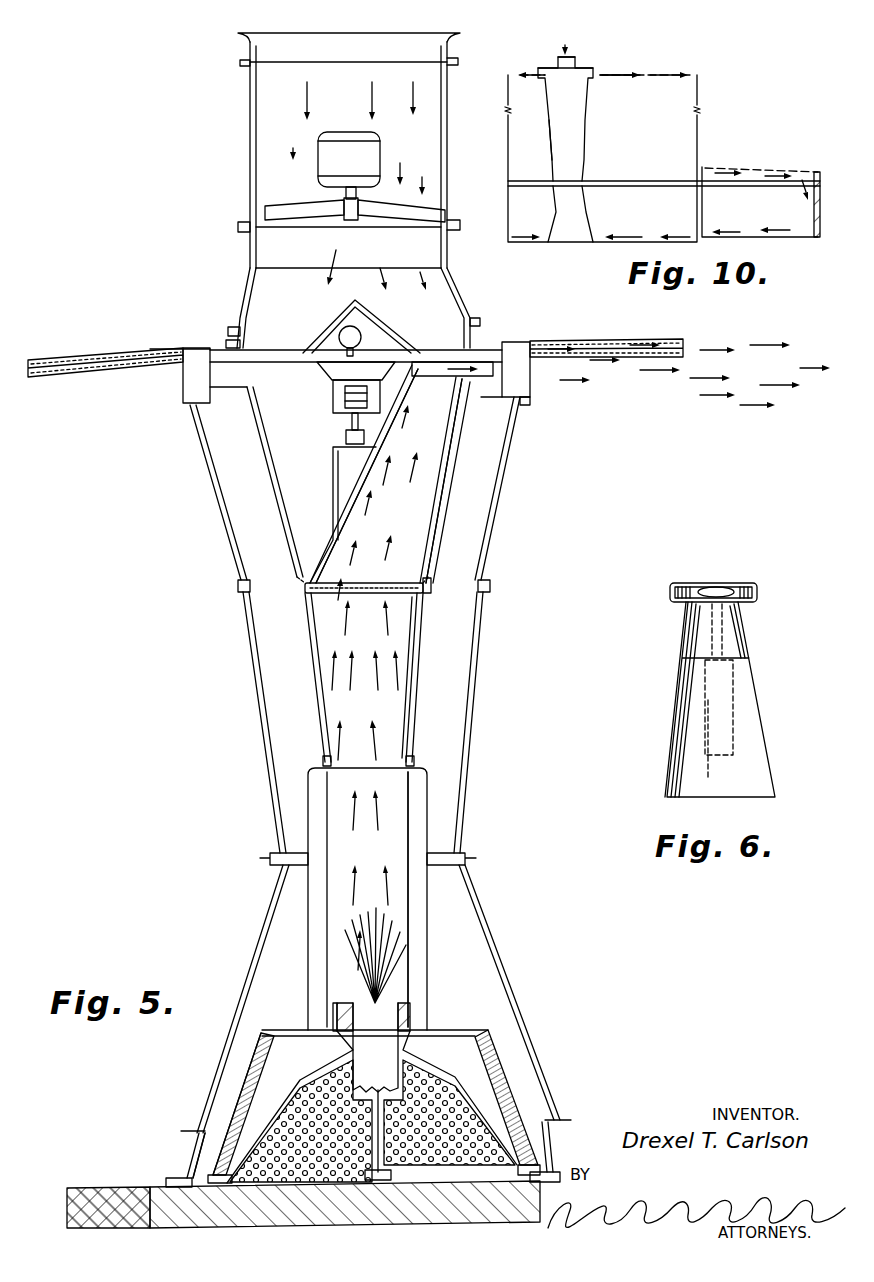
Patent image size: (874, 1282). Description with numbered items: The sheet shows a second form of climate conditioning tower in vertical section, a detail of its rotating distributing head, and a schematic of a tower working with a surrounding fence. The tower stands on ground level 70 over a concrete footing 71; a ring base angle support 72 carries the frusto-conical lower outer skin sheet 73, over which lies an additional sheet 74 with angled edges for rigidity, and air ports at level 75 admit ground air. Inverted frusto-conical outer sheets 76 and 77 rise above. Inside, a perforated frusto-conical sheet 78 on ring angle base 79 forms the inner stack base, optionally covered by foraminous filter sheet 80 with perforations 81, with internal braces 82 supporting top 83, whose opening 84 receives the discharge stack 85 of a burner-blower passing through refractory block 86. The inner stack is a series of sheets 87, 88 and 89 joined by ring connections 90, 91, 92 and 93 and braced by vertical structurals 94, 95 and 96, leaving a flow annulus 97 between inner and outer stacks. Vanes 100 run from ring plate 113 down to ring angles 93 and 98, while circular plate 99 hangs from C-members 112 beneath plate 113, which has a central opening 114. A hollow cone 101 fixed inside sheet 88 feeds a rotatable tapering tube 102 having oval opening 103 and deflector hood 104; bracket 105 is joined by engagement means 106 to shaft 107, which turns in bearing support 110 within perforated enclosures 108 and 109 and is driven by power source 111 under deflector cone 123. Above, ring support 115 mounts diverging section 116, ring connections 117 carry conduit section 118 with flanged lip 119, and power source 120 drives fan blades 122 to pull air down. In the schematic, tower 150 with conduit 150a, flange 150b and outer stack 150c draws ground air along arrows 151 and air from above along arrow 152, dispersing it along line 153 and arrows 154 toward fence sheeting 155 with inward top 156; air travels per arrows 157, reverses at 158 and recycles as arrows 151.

In FIG. 5, the ground level 70 is at (95, 1188).
In FIG. 5, the concrete foundation or footing 71 is at (286, 1182).
In FIG. 5, the ring base angle support 72 is at (168, 1180).
In FIG. 5, the lower outer stack skin sheet 73 is at (232, 1094).
In FIG. 5, the additional frusto-conical sheet 74 is at (248, 945).
In FIG. 5, the openings or ports level 75 is at (180, 1134).
In FIG. 5, the inverted frusto-conical outer stack sheet 76 is at (262, 743).
In FIG. 5, the inverted frusto-conical outer stack sheet 77 is at (205, 478).
In FIG. 5, the perforated frusto-conical metal sheet 78 is at (320, 1062).
In FIG. 5, the ring angle base 79 is at (208, 1188).
In FIG. 5, the sheet of foraminous material 80 is at (262, 1056).
In FIG. 5, the perforations 81 is at (248, 1070).
In FIG. 5, the internal structural braces 82 is at (436, 1062).
In FIG. 5, the top 83 is at (462, 1032).
In FIG. 5, the opening 84 is at (410, 1010).
In FIG. 5, the discharge stack 85 is at (392, 994).
In FIG. 5, the refractory block 86 is at (337, 1012).
In FIG. 5, the inner stack metal sheet 87 is at (412, 805).
In FIG. 5, the inner stack metal sheet 88 is at (418, 660).
In FIG. 5, the inner stack metal sheet 89 is at (444, 490).
In FIG. 5, the ring connection 90 is at (410, 1030).
In FIG. 5, the ring connection 91 is at (415, 758).
In FIG. 5, the ring connection 92 is at (431, 590).
In FIG. 5, the ring angle 93 is at (248, 398).
In FIG. 5, the vertical flange or structural 94 is at (415, 900).
In FIG. 5, the vertical flange or structural 95 is at (418, 690).
In FIG. 5, the vertical flange or structural 96 is at (436, 540).
In FIG. 5, the flow annulus 97 is at (475, 628).
In FIG. 5, the ring angle 98 is at (530, 404).
In FIG. 5, the circular top cap or plate 99 is at (476, 318).
In FIG. 5, the vertical vanes 100 is at (183, 378).
In FIG. 5, the hollow open-ended cone 101 is at (345, 593).
In FIG. 5, the angled tapering frusto-conical tube 102 is at (350, 508).
In FIG. 6, the angled tapering frusto-conical tube 102 is at (754, 683).
In FIG. 5, the oval opening 103 is at (445, 378).
In FIG. 6, the oval opening 103 is at (716, 586).
In FIG. 5, the deflector hood 104 is at (428, 376).
In FIG. 6, the deflector hood 104 is at (684, 583).
In FIG. 5, the bracket 105 is at (333, 478).
In FIG. 6, the bracket 105 is at (690, 695).
In FIG. 5, the engagement means 106 is at (346, 436).
In FIG. 5, the rotating shaft 107 is at (400, 425).
In FIG. 5, the frusto-conical sheet enclosure 108 is at (333, 392).
In FIG. 5, the frusto-conical sheet enclosure 109 is at (317, 366).
In FIG. 5, the bearing support means 110 is at (352, 400).
In FIG. 5, the power source 111 is at (362, 325).
In FIG. 5, the C-shaped angle support members 112 is at (92, 355).
In FIG. 5, the hollow ring plate 113 is at (165, 345).
In FIG. 5, the central opening 114 is at (268, 308).
In FIG. 5, the C-section angle ring support member 115 is at (228, 330).
In FIG. 5, the lower downwardly diverging sheet section 116 is at (256, 256).
In FIG. 5, the ring angle supports and connections 117 is at (240, 226).
In FIG. 5, the conduit section 118 is at (256, 108).
In FIG. 5, the outwardly flanged lip member 119 is at (240, 40).
In FIG. 5, the power source 120 is at (380, 152).
In FIG. 5, the fan blades 122 is at (298, 205).
In FIG. 5, the deflector cone 123 is at (376, 270).
In FIG. 10, the tower 150 is at (584, 132).
In FIG. 10, the upper flow conduit 150a is at (572, 57).
In FIG. 10, the upper deflecting flange 150b is at (588, 65).
In FIG. 10, the outer stack 150c is at (586, 152).
In FIG. 10, the lower arrows 151 is at (512, 236).
In FIG. 10, the arrow 152 is at (562, 46).
In FIG. 10, the air dispersal line 153 is at (645, 75).
In FIG. 10, the arrows 154 is at (615, 80).
In FIG. 10, the fence sheeting 155 is at (762, 180).
In FIG. 10, the inwardly extended fence top 156 is at (812, 172).
In FIG. 10, the arrows 157 is at (722, 178).
In FIG. 10, the change of direction 158 is at (798, 222).